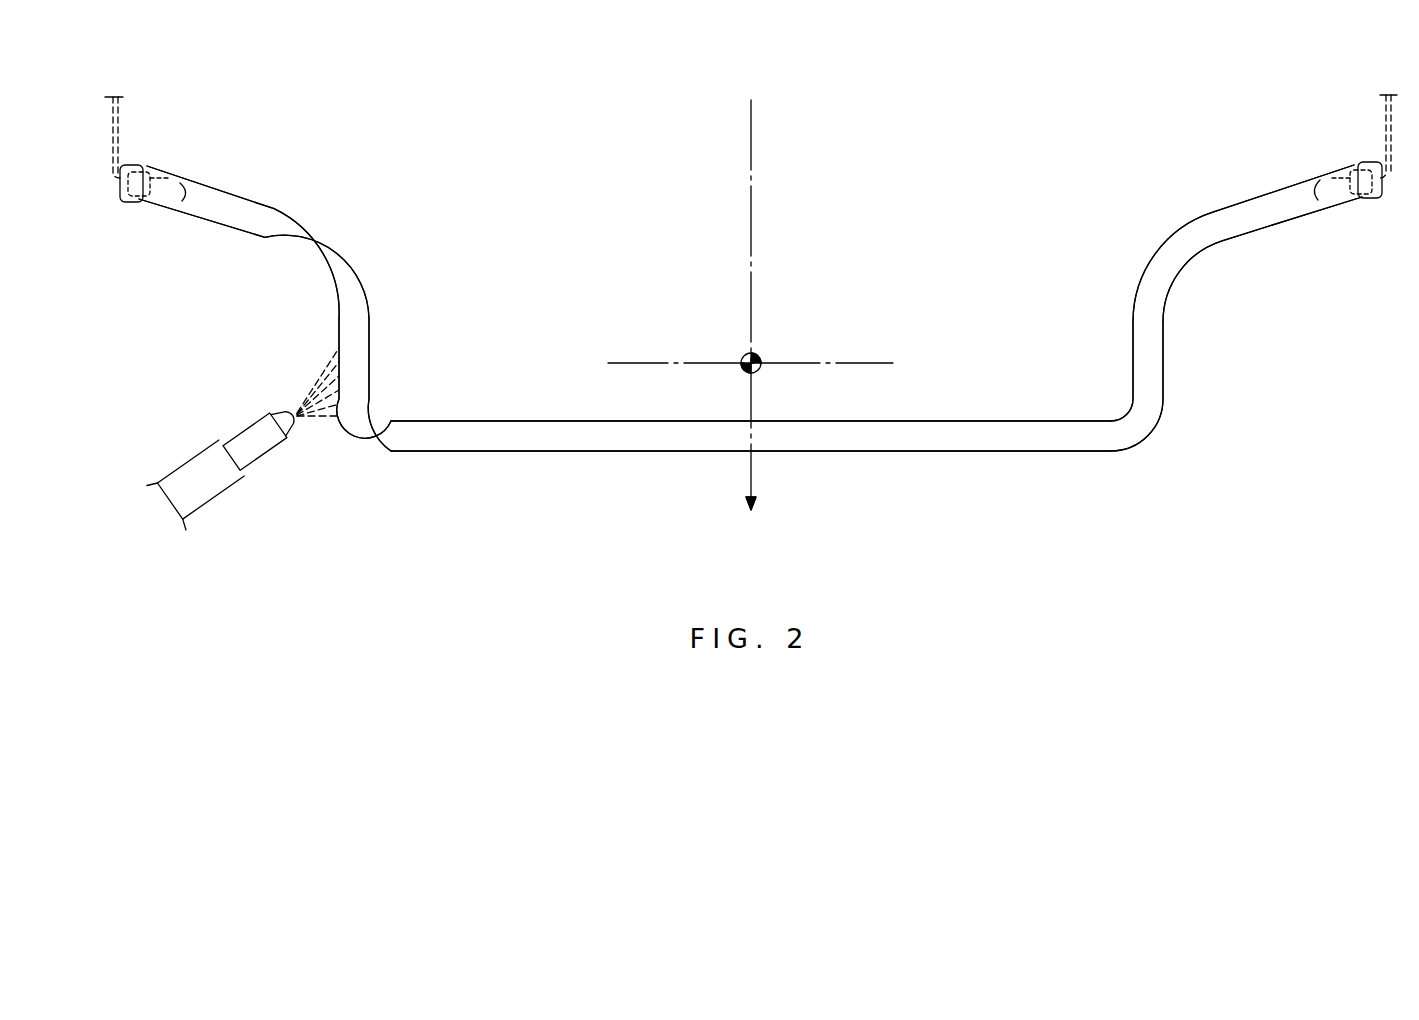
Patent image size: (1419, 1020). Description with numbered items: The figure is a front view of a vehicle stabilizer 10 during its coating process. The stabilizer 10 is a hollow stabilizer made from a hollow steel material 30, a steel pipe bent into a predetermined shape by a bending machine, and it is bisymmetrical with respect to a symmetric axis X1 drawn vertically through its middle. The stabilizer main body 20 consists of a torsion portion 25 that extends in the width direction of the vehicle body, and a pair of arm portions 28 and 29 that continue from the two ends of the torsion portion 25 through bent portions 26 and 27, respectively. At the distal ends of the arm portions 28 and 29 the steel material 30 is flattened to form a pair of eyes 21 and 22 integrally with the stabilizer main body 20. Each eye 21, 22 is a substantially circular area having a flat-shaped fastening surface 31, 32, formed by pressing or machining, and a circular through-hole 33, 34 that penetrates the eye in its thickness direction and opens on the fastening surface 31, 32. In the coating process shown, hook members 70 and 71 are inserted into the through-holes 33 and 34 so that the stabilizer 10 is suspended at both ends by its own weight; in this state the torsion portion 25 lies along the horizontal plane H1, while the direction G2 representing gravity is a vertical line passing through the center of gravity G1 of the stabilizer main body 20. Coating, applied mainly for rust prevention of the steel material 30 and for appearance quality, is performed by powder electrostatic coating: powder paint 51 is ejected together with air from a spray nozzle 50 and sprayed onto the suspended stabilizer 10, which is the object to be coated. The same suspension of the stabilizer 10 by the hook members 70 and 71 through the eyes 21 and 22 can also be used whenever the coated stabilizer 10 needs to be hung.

The stabilizer 10 is at (597, 493).
The stabilizer main body 20 is at (998, 420).
The eye 21 is at (131, 204).
The eye 22 is at (1372, 200).
The torsion portion 25 is at (873, 442).
The bent portion 26 is at (352, 444).
The bent portion 27 is at (1152, 437).
The arm portion 28 is at (224, 188).
The arm portion 29 is at (1229, 202).
The steel material 30 is at (466, 420).
The fastening surface 31 is at (148, 170).
The fastening surface 32 is at (1352, 168).
The through-hole 33 is at (150, 192).
The through-hole 34 is at (1352, 190).
The spray nozzle 50 is at (232, 432).
The powder paint 51 is at (306, 378).
The hook member 70 is at (120, 117).
The hook member 71 is at (1384, 118).
The symmetric axis X1 is at (757, 143).
The center of gravity G1 is at (744, 357).
The direction representing gravity G2 is at (750, 520).
The horizontal plane H1 is at (632, 358).